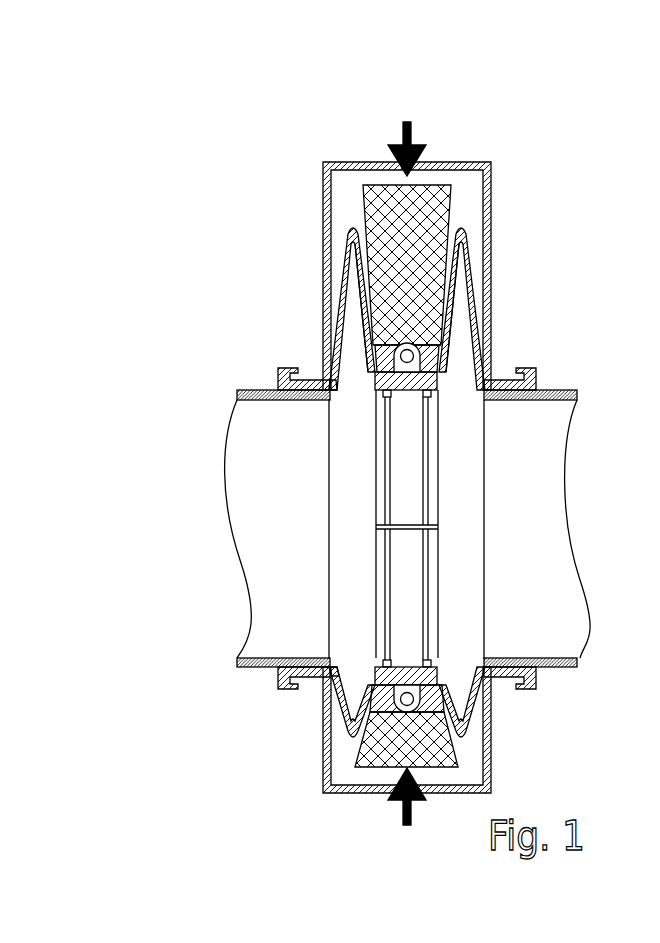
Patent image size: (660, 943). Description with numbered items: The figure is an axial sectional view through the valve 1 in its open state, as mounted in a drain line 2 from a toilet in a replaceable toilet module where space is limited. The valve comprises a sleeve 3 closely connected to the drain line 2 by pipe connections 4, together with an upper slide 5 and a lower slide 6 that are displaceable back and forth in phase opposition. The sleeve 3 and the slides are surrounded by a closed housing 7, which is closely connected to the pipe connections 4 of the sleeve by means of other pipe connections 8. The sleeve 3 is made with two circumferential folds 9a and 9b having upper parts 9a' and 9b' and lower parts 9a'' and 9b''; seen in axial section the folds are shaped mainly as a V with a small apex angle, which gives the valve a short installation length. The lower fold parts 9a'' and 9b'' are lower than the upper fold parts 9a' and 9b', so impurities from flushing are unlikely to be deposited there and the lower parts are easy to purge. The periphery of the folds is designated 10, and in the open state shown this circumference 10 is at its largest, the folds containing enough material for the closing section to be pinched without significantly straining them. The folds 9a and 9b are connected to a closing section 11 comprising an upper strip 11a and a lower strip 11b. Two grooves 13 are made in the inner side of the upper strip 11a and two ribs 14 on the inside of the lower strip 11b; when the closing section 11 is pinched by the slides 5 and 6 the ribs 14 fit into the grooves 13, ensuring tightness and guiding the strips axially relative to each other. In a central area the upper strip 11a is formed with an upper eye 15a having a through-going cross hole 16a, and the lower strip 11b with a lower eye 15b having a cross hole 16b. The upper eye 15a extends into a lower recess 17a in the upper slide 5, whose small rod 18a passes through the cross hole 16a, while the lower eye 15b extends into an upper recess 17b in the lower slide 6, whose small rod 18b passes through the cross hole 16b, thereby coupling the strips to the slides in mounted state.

The valve 1 is at (286, 156).
The drain line 2 is at (245, 392).
The sleeve 3 is at (488, 228).
The pipe connections 4 is at (565, 402).
The upper slide 5 is at (378, 197).
The lower slide 6 is at (370, 765).
The housing 7 is at (323, 765).
The other pipe connections 8 is at (503, 370).
The circumferential fold 9a is at (295, 309).
The circumferential fold 9b is at (506, 309).
The upper fold part 9a' is at (262, 308).
The upper fold part 9b' is at (507, 308).
The lower fold part 9a'' is at (305, 707).
The lower fold part 9b'' is at (507, 703).
The periphery of the folds 10 is at (462, 290).
The closing section 11 is at (376, 413).
The upper strip 11a is at (377, 463).
The lower strip 11b is at (376, 595).
The grooves 13 is at (427, 458).
The ribs 14 is at (427, 575).
The upper eye 15a is at (372, 350).
The lower eye 15b is at (335, 690).
The cross hole 16a is at (420, 352).
The cross hole 16b is at (415, 700).
The lower recess 17a is at (378, 372).
The upper recess 17b is at (378, 668).
The small rod 18a is at (410, 390).
The small rod 18b is at (418, 665).